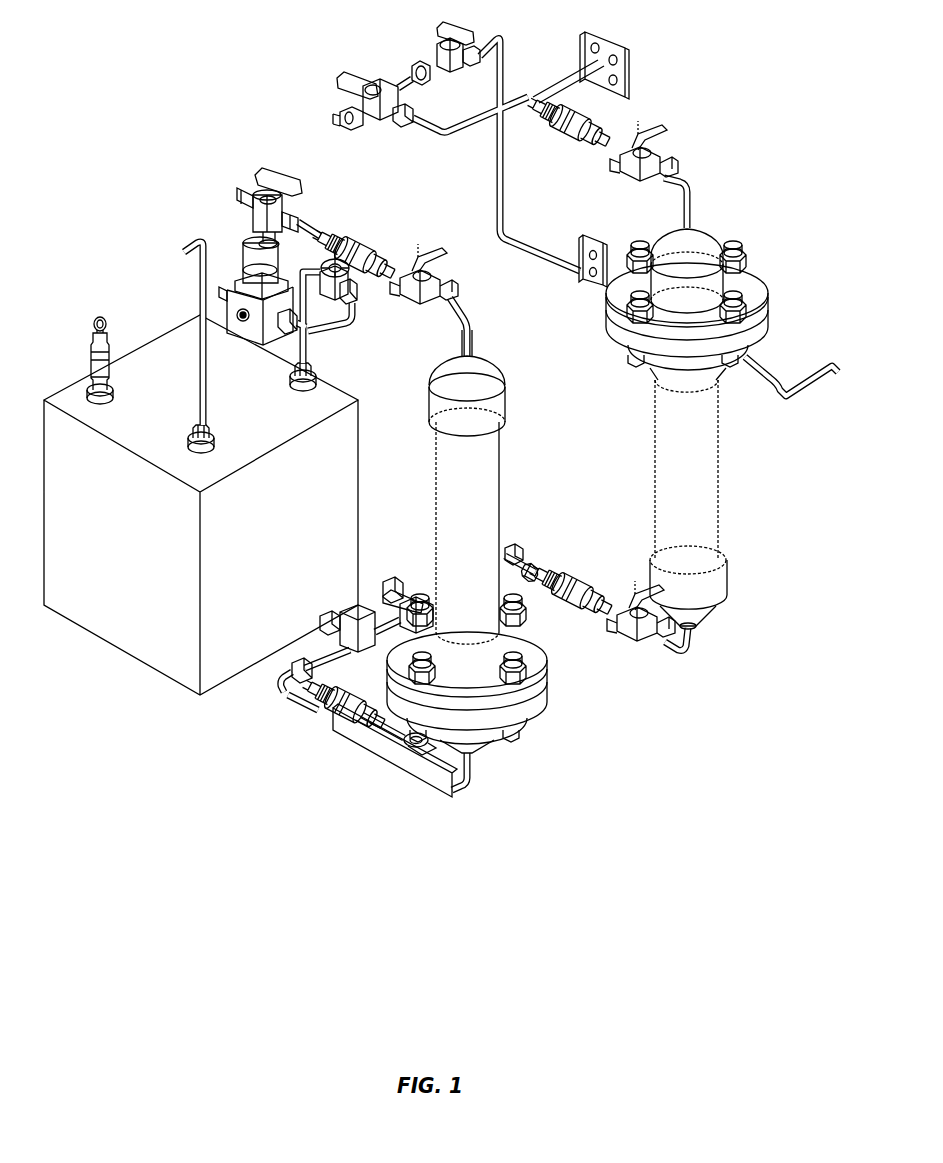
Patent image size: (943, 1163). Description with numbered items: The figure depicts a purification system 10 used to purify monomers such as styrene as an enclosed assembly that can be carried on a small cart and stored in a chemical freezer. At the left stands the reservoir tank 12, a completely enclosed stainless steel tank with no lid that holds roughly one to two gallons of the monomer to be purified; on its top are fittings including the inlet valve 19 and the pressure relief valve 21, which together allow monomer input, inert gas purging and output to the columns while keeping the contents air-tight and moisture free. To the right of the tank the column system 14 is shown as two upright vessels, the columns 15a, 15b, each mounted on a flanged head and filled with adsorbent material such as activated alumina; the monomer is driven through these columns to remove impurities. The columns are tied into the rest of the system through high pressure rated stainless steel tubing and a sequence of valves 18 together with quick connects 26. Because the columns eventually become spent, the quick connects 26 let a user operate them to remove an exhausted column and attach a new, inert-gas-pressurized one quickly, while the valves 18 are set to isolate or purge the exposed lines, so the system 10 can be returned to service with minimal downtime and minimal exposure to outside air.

The purification system 10 is at (222, 42).
The reservoir tank 12 is at (122, 660).
The activated alumina column system 14 is at (706, 429).
The column 15a is at (500, 478).
The column 15b is at (717, 512).
The valve 18 is at (428, 260).
The inlet valve 19 is at (190, 438).
The pressure relief valve 21 is at (87, 362).
The quick connect 26 is at (352, 245).